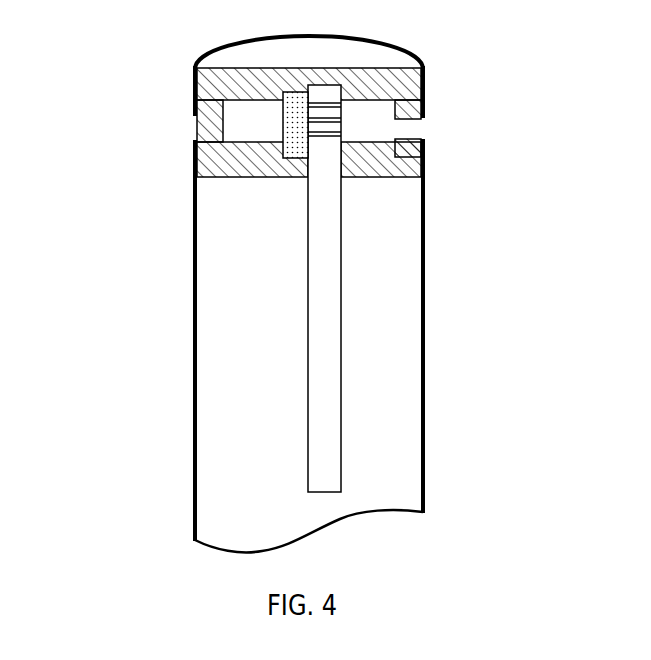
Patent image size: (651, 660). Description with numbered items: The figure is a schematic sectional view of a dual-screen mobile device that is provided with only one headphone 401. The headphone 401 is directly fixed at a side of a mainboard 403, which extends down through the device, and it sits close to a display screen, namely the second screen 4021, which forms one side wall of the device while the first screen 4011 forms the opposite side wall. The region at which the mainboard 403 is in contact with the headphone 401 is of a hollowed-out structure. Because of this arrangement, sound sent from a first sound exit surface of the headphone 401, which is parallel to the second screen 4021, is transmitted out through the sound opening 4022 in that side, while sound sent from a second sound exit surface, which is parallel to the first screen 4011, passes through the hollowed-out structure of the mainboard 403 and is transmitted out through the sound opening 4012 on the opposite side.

The headphone 401 is at (293, 143).
The first screen 4011 is at (426, 223).
The sound opening 4012 is at (424, 128).
The second screen 4021 is at (193, 242).
The sound opening 4022 is at (192, 128).
The mainboard 403 is at (325, 370).